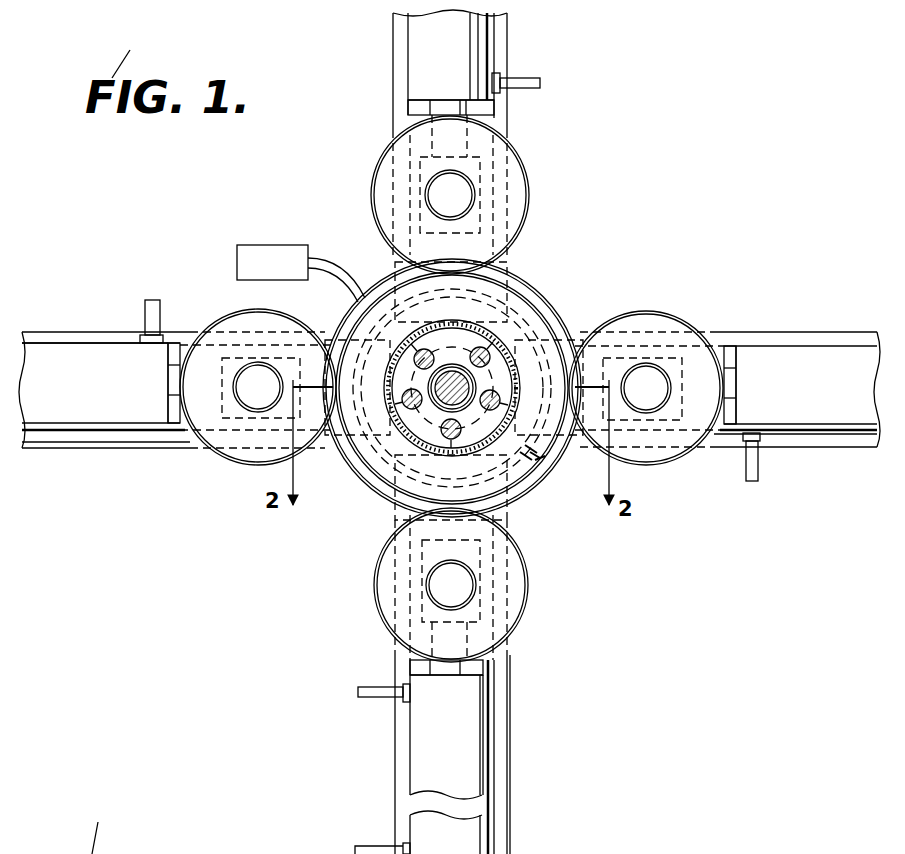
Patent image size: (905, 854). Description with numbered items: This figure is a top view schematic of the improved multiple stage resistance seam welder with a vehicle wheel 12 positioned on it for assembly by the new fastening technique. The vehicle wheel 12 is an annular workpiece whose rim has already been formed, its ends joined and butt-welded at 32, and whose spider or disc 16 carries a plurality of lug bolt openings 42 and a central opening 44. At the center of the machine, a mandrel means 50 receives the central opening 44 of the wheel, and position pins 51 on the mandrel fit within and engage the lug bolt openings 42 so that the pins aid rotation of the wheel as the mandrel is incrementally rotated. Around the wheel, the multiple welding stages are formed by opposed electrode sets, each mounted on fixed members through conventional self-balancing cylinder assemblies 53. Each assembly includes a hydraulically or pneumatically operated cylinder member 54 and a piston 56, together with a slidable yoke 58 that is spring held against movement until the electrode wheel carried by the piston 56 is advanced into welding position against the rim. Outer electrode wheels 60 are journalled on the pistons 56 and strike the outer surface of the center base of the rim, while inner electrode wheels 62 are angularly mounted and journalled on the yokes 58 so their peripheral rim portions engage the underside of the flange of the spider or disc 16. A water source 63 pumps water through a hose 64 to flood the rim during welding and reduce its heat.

The vehicle wheel 12 is at (356, 505).
The spider or disc 16 is at (540, 458).
The butt weld 32 is at (515, 500).
The lug bolt openings 42 is at (475, 350).
The central opening 44 is at (455, 412).
The mandrel means 50 is at (452, 388).
The position pins 51 is at (490, 364).
The self-balancing cylinder assemblies 53 is at (510, 56).
The cylinder members 54 is at (444, 60).
The pistons 56 is at (470, 108).
The slidable yokes 58 is at (528, 275).
The outer electrode wheels 60 is at (529, 188).
The inner electrode wheels 62 is at (510, 305).
The water source 63 is at (263, 254).
The hose 64 is at (333, 262).